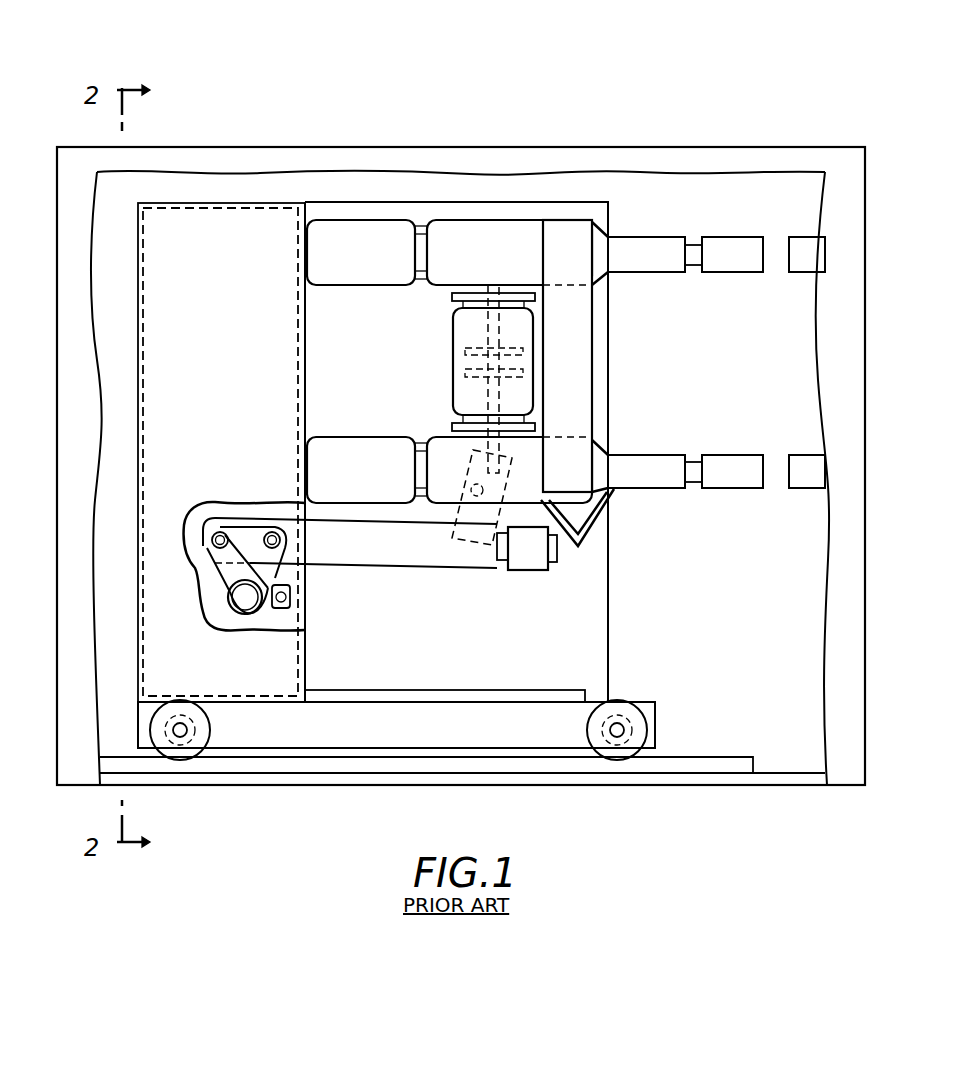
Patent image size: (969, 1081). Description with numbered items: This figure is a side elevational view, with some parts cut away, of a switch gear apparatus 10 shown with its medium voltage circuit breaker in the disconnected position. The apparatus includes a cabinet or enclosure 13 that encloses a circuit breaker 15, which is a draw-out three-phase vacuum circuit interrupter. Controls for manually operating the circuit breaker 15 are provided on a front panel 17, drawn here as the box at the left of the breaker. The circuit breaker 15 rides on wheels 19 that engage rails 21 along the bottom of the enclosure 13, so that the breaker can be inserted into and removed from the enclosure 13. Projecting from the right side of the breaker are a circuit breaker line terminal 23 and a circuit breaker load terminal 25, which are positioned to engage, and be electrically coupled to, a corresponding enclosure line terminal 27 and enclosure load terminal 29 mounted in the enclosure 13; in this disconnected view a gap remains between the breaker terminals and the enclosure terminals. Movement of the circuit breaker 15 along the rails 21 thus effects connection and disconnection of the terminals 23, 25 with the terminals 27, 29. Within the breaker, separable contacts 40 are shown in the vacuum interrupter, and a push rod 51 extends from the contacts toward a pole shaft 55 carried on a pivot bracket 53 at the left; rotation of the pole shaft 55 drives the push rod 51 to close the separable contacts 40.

The switch gear apparatus 10 is at (364, 62).
The enclosure 13 is at (737, 147).
The circuit breaker 15 is at (630, 635).
The front panel 17 is at (138, 290).
The wheels 19 is at (207, 733).
The rails 21 is at (698, 757).
The circuit breaker line terminal 23 is at (732, 245).
The circuit breaker load terminal 25 is at (744, 462).
The enclosure line terminal 27 is at (800, 266).
The enclosure load terminal 29 is at (802, 486).
The separable contacts 40 is at (452, 362).
The push rod 51 is at (355, 560).
The pivot plate 53 is at (204, 480).
The pole shaft 55 is at (245, 602).